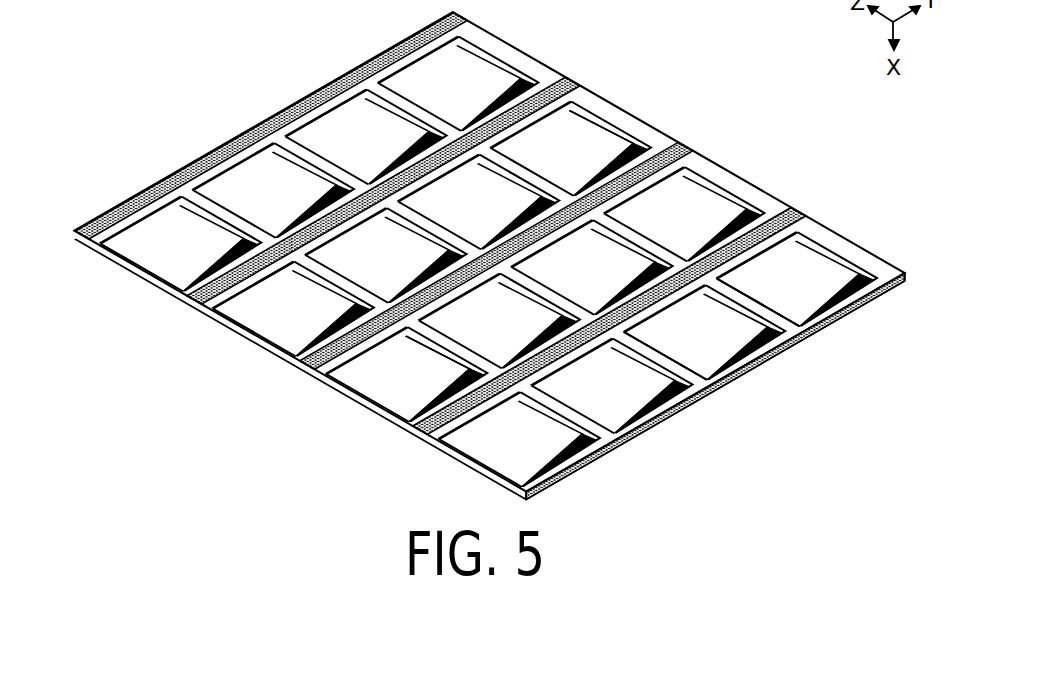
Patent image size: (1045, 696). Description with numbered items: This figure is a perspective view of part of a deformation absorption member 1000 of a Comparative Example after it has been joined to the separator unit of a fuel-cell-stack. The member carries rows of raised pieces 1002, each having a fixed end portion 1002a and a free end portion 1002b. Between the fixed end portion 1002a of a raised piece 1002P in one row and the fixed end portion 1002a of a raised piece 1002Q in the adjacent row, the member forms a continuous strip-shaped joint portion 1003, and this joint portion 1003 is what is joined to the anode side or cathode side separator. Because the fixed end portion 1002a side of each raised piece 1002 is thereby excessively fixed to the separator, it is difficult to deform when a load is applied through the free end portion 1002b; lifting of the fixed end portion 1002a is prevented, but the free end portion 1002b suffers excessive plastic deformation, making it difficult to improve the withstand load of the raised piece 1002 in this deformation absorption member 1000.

The deformation absorption member 1000 is at (378, 408).
The raised piece 1002 is at (523, 282).
The fixed end portion 1002a is at (704, 378).
The free end portion 1002b is at (831, 283).
The raised piece of one row 1002P is at (582, 274).
The raised piece of another row 1002Q is at (590, 127).
The joint portion 1003 is at (486, 250).